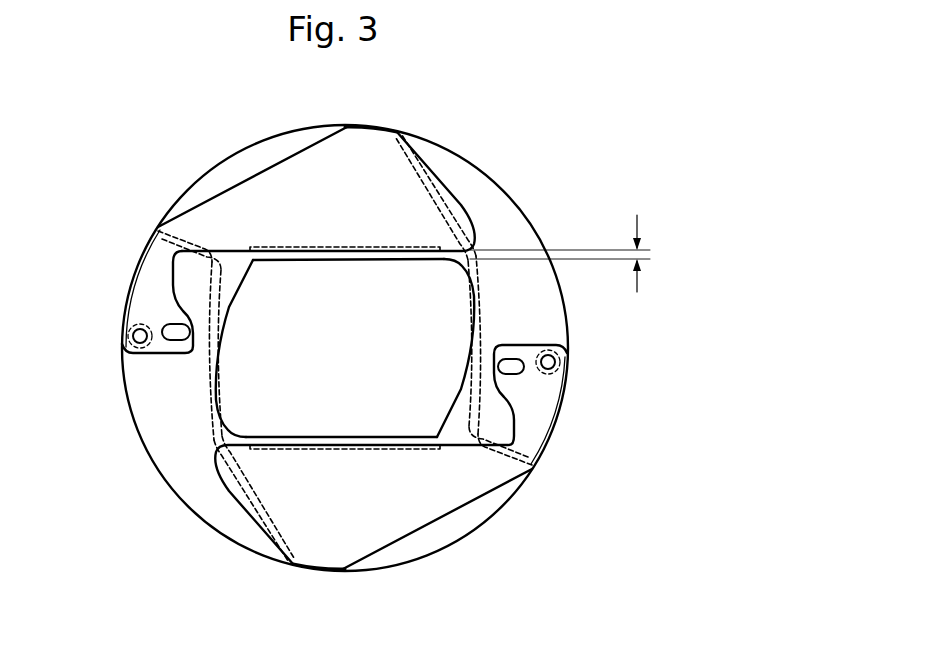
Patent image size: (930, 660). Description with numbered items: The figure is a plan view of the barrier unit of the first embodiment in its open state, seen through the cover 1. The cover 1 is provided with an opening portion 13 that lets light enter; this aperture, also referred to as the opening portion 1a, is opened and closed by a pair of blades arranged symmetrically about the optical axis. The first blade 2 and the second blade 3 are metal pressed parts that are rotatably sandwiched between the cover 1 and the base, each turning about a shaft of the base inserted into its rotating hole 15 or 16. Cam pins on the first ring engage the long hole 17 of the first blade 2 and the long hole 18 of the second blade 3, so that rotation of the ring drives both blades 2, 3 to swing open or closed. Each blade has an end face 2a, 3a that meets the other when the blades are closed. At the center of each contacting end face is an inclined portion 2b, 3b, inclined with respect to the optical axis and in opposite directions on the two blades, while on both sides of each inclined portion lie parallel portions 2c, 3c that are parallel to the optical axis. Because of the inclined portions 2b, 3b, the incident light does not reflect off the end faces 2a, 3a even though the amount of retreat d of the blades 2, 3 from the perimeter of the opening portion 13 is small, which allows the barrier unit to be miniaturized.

The cover 1 is at (519, 208).
The opening portion 1a is at (473, 284).
The first blade 2 is at (282, 172).
The end face 2a is at (357, 250).
The inclined portion 2b is at (320, 254).
The parallel portion 2c is at (235, 251).
The second blade 3 is at (409, 523).
The end face 3a is at (337, 447).
The inclined portion 3b is at (313, 442).
The parallel portion 3c is at (237, 477).
The opening portion 13 is at (466, 474).
The rotating hole 15 is at (130, 331).
The rotating hole 16 is at (558, 370).
The long hole 17 is at (173, 323).
The long hole 18 is at (517, 375).
The amount of retreat d is at (570, 253).